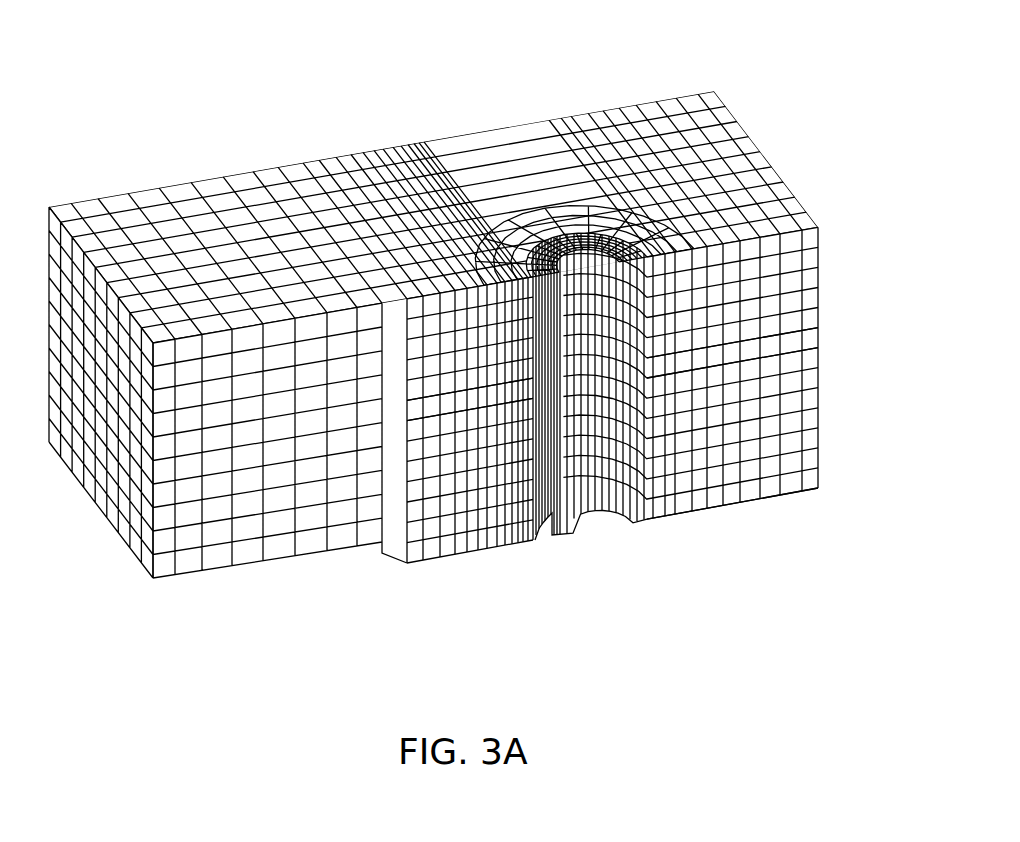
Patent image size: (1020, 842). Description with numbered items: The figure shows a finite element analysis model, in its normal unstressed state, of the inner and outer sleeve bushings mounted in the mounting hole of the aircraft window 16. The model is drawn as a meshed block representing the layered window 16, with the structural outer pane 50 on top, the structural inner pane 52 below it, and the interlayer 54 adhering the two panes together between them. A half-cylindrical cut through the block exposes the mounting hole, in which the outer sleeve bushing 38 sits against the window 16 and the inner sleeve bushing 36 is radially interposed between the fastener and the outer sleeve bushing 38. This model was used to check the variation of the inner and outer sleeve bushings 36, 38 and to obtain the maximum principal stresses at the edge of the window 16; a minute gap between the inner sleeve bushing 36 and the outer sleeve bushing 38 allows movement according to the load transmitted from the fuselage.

The window 16 is at (636, 81).
The structural outer pane 50 is at (820, 298).
The interlayer 54 is at (824, 346).
The structural inner pane 52 is at (825, 428).
The inner sleeve bushing 36 is at (568, 534).
The outer sleeve bushing 38 is at (523, 541).